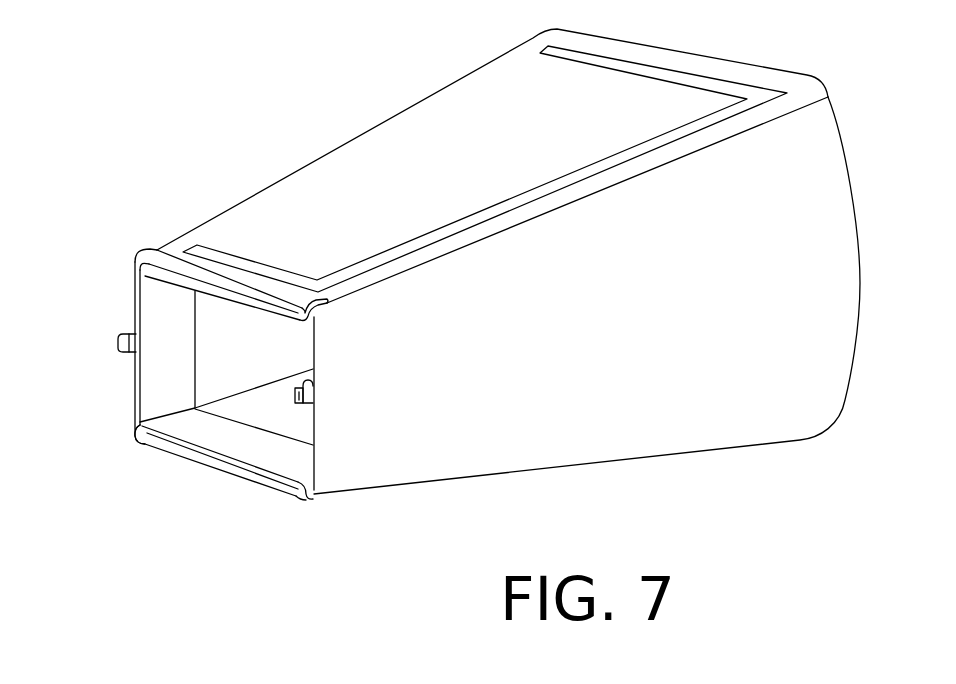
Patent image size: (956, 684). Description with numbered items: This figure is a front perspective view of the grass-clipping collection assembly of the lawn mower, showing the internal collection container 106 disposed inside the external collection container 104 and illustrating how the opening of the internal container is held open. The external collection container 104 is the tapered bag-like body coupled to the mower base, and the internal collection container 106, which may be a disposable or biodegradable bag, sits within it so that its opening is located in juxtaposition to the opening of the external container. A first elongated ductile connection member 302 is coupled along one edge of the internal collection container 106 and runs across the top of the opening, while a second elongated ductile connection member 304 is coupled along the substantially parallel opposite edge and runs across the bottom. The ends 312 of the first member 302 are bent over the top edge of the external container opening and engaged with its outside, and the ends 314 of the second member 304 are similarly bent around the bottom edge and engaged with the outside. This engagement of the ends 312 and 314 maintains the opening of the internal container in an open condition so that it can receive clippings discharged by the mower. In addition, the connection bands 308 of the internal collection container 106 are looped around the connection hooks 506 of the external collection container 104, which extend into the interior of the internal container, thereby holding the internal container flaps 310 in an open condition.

The external collection container 104 is at (537, 427).
The internal collection container 106 is at (261, 421).
The first elongated ductile connection member 302 is at (212, 302).
The second elongated ductile connection member 304 is at (251, 462).
The connection bands 308 is at (133, 353).
The internal container flaps 310 is at (210, 287).
The ends of first elongated ductile connection member 312 is at (149, 251).
The ends of second elongated ductile connection member 314 is at (151, 443).
The connection hooks 506 is at (118, 343).